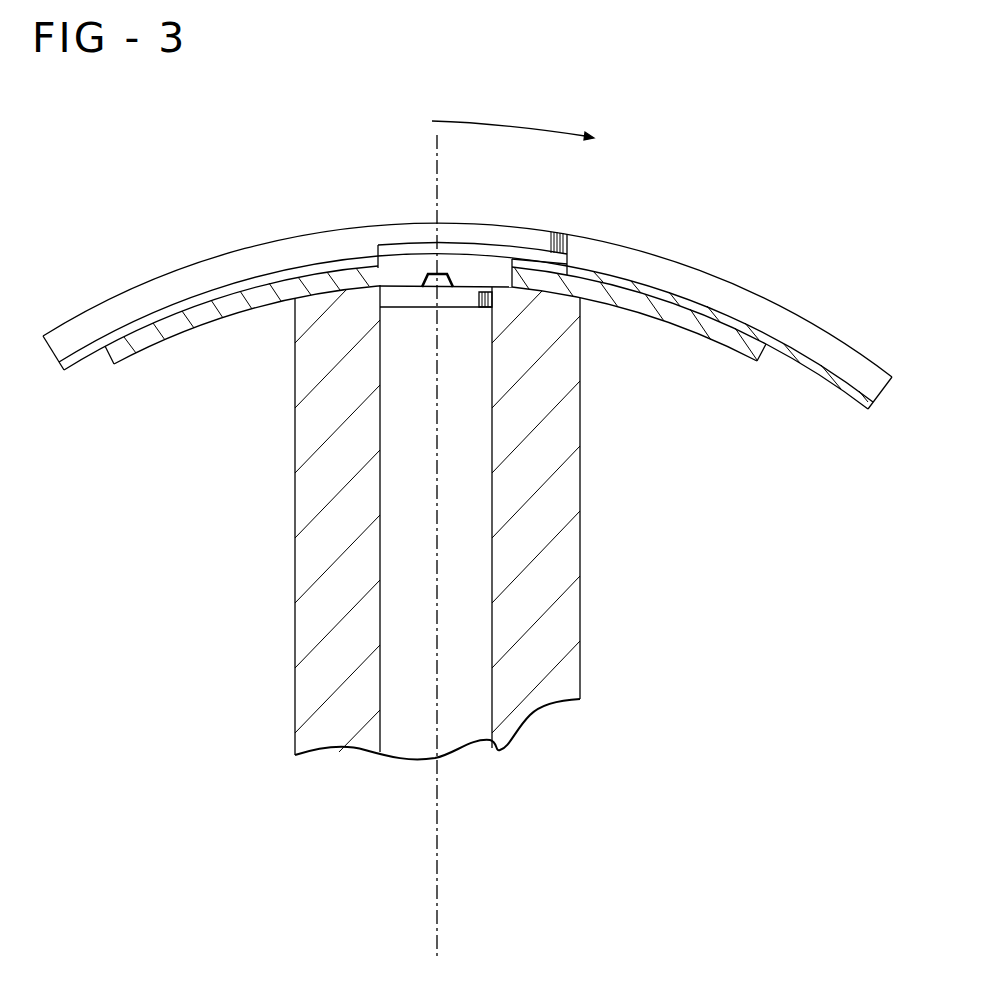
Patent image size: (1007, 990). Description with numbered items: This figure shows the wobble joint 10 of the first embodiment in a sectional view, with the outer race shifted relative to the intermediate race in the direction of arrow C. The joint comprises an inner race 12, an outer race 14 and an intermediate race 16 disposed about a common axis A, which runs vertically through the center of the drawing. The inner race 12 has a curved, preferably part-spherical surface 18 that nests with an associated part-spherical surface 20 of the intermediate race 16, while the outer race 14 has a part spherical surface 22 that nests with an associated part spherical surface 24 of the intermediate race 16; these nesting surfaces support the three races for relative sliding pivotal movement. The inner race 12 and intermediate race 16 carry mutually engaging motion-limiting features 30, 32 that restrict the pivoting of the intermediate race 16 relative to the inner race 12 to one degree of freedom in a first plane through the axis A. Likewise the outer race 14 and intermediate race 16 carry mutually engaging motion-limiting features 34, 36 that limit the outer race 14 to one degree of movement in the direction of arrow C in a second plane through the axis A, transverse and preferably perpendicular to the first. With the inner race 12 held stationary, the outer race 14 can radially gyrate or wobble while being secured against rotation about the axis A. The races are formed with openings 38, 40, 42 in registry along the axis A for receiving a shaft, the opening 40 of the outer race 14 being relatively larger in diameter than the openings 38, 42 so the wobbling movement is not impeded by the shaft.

The wobble joint 10 is at (842, 252).
The inner race 12 is at (294, 500).
The outer race 14 is at (54, 334).
The intermediate race 16 is at (163, 342).
The part-spherical surface 18 is at (568, 303).
The part-spherical surface 20 is at (698, 334).
The part spherical surface 22 is at (185, 298).
The part spherical surface 24 is at (237, 282).
The motion-limiting feature 30 is at (445, 272).
The motion-limiting feature 32 is at (428, 285).
The motion-limiting feature 34 is at (818, 368).
The motion-limiting feature 36 is at (747, 337).
The opening 38 is at (399, 742).
The opening 40 is at (483, 291).
The opening 42 is at (505, 237).
The common axis A is at (441, 189).
The arrow C is at (503, 121).